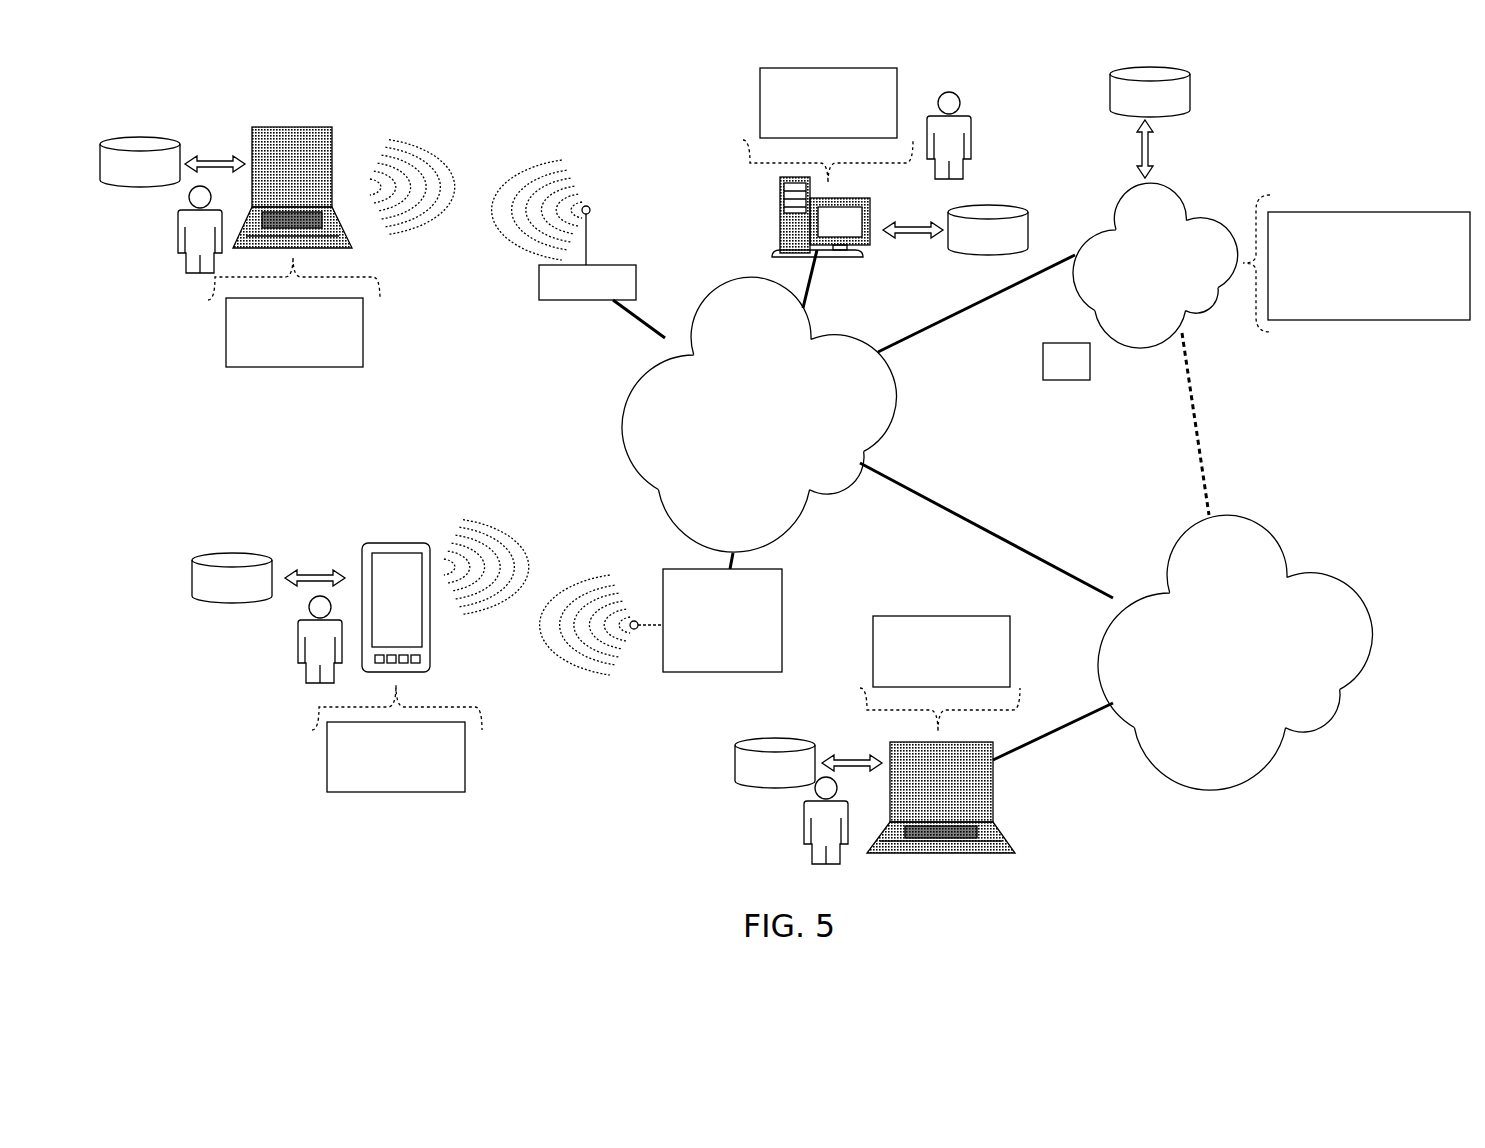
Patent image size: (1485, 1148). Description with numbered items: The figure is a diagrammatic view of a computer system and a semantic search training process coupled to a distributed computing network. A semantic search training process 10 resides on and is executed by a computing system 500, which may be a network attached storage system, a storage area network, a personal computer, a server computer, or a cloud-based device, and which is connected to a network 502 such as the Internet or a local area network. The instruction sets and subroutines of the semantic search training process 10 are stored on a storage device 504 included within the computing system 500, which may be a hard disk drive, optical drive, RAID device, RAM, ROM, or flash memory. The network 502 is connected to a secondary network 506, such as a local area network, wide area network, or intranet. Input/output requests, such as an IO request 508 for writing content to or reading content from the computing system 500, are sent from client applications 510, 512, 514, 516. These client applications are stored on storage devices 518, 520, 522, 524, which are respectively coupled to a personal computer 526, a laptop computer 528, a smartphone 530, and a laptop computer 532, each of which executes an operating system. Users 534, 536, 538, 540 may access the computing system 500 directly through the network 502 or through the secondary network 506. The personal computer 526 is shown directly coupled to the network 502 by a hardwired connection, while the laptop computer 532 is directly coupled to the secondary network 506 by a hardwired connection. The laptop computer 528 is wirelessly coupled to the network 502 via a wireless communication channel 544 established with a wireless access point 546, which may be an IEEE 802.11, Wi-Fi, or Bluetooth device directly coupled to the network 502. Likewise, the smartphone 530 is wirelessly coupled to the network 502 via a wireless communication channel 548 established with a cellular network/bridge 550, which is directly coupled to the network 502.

The semantic search training process 10 is at (1445, 212).
The computing system 500 is at (1155, 265).
The network 502 is at (759, 414).
The storage device 504 is at (1150, 92).
The secondary network 506 is at (1235, 652).
The IO request 508 is at (1090, 360).
The client application 510 is at (897, 115).
The client application 512 is at (363, 320).
The client application 514 is at (465, 745).
The client application 516 is at (1010, 665).
The storage device 518 is at (988, 230).
The storage device 520 is at (140, 162).
The storage device 522 is at (232, 578).
The storage device 524 is at (775, 763).
The personal computer 526 is at (870, 215).
The laptop computer 528 is at (330, 153).
The smartphone 530 is at (430, 630).
The laptop computer 532 is at (993, 790).
The user 534 is at (971, 130).
The user 536 is at (155, 217).
The user 538 is at (297, 633).
The user 540 is at (795, 832).
The wireless communication channel 544 is at (483, 170).
The wireless access point 546 is at (533, 278).
The wireless communication channel 548 is at (545, 570).
The cellular network/bridge 550 is at (782, 585).